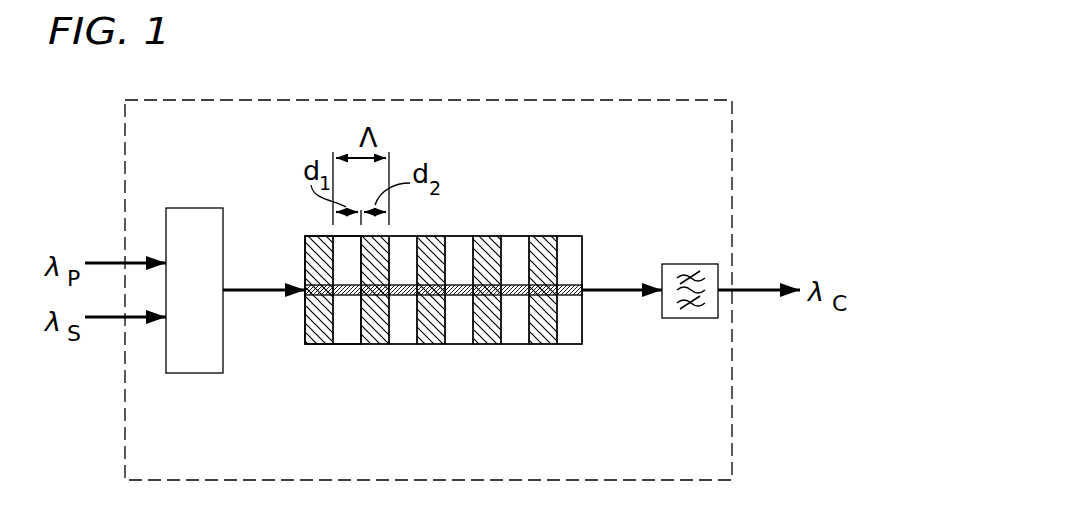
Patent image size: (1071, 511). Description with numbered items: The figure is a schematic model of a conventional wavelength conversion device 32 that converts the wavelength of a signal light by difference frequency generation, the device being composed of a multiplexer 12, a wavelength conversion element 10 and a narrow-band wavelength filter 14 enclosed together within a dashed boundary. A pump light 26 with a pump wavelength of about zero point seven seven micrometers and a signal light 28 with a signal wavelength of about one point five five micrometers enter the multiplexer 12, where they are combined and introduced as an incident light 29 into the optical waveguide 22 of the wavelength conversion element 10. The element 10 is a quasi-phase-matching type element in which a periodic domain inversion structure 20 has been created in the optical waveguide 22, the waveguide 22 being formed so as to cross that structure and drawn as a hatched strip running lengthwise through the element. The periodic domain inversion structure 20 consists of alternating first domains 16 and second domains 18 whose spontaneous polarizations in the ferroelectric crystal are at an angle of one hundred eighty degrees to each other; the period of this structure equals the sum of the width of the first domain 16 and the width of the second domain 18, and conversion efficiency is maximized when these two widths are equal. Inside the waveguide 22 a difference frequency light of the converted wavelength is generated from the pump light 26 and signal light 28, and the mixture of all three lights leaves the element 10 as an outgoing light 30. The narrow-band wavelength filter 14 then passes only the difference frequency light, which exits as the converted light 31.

The wavelength conversion element 10 is at (468, 303).
The multiplexer 12 is at (185, 208).
The narrow-band wavelength filter 14 is at (688, 264).
The first domain 16 is at (320, 346).
The second domain 18 is at (350, 346).
The periodic domain inversion structure 20 is at (355, 405).
The optical waveguide 22 is at (355, 288).
The pump light 26 is at (110, 262).
The signal light 28 is at (110, 318).
The incident light 29 is at (262, 292).
The outgoing light 30 is at (624, 292).
The converted light 31 is at (752, 292).
The wavelength conversion device 32 is at (578, 100).